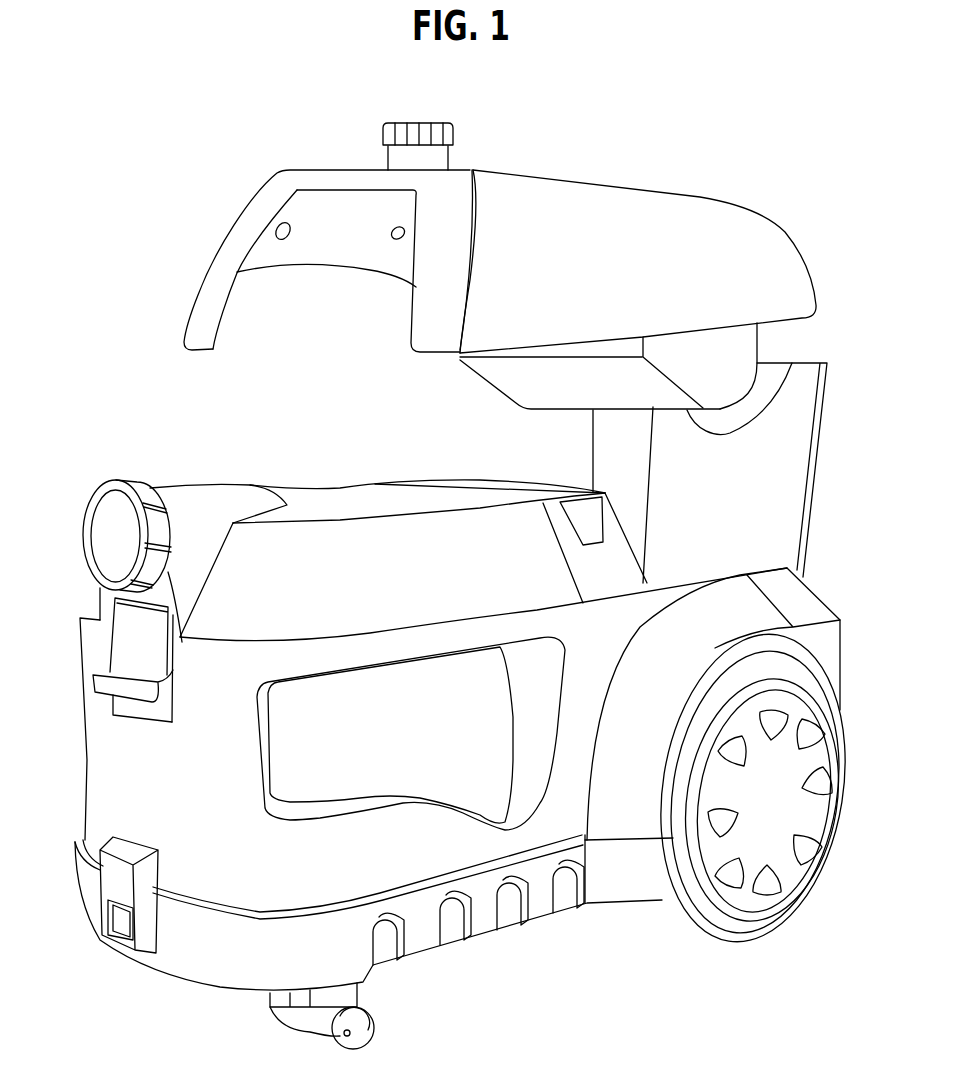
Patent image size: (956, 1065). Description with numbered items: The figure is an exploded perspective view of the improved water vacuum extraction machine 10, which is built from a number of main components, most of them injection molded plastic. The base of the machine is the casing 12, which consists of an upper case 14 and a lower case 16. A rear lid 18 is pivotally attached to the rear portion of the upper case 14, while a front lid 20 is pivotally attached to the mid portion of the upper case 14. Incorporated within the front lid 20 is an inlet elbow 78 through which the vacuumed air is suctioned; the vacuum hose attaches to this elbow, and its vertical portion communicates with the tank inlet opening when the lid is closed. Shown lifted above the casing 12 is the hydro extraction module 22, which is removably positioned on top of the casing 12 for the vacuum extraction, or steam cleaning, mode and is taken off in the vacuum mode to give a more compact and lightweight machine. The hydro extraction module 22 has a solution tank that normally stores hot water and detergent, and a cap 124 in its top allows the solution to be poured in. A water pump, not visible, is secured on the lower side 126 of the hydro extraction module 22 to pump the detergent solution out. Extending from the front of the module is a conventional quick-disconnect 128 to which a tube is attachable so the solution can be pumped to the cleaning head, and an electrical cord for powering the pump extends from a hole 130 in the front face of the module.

The water vacuum extraction machine 10 is at (150, 406).
The casing 12 is at (117, 992).
The upper case 14 is at (95, 772).
The lower case 16 is at (228, 963).
The rear lid 18 is at (792, 434).
The front lid 20 is at (317, 497).
The hydro extraction module 22 is at (638, 203).
The inlet elbow 78 is at (205, 496).
The cap 124 is at (449, 134).
The lower side 126 is at (558, 382).
The quick-disconnect 128 is at (276, 226).
The hole 130 is at (395, 241).